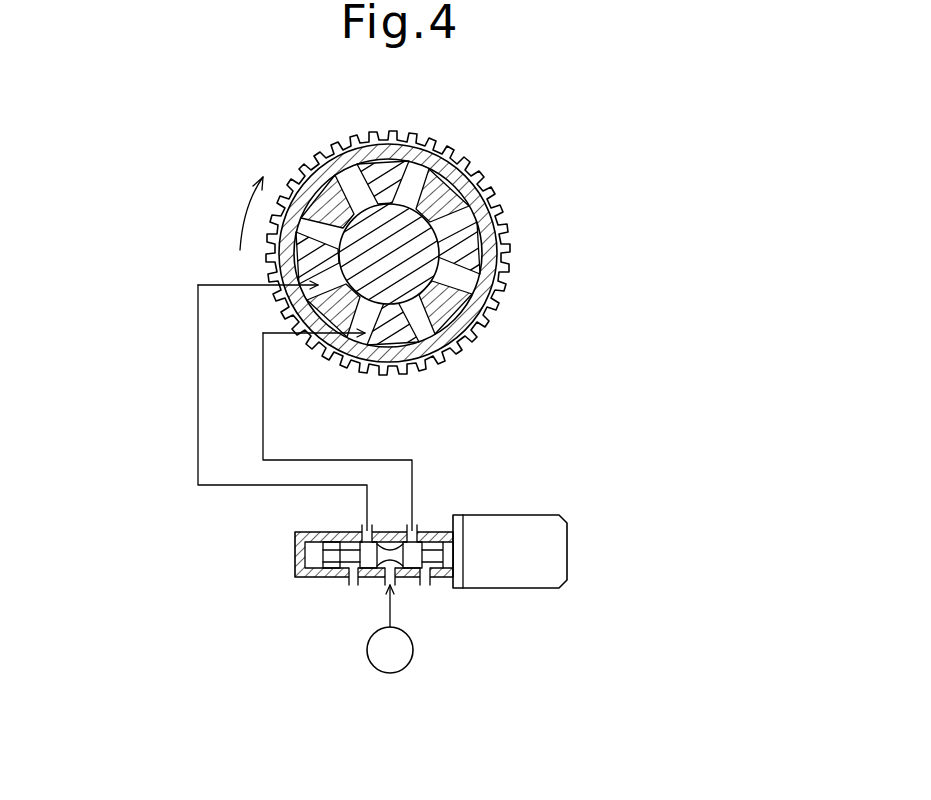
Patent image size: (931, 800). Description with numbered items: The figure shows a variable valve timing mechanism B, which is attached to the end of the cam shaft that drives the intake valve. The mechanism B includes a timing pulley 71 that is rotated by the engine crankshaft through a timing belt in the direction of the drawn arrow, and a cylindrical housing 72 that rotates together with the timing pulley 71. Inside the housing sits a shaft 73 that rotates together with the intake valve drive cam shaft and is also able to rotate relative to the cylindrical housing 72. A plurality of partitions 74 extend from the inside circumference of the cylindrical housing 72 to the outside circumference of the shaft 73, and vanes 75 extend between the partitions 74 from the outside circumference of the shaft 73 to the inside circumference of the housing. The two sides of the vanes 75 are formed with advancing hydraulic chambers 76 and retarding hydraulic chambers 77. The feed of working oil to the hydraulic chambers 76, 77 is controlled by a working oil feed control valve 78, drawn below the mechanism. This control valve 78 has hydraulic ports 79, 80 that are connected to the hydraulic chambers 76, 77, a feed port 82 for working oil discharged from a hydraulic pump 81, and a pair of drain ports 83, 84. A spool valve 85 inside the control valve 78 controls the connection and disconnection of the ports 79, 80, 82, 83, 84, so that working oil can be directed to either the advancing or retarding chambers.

The variable valve timing mechanism B is at (518, 190).
The timing pulley 71 is at (505, 288).
The cylindrical housing 72 is at (468, 337).
The shaft 73 is at (435, 160).
The partitions 74 is at (353, 147).
The vanes 75 is at (318, 160).
The advancing hydraulic chambers 76 is at (498, 271).
The retarding hydraulic chambers 77 is at (268, 278).
The working oil feed control valve 78 is at (548, 503).
The hydraulic port 79 is at (417, 527).
The hydraulic port 80 is at (365, 528).
The hydraulic pump 81 is at (412, 664).
The feed port 82 is at (385, 585).
The drain port 83 is at (425, 582).
The drain port 84 is at (353, 580).
The spool valve 85 is at (333, 553).